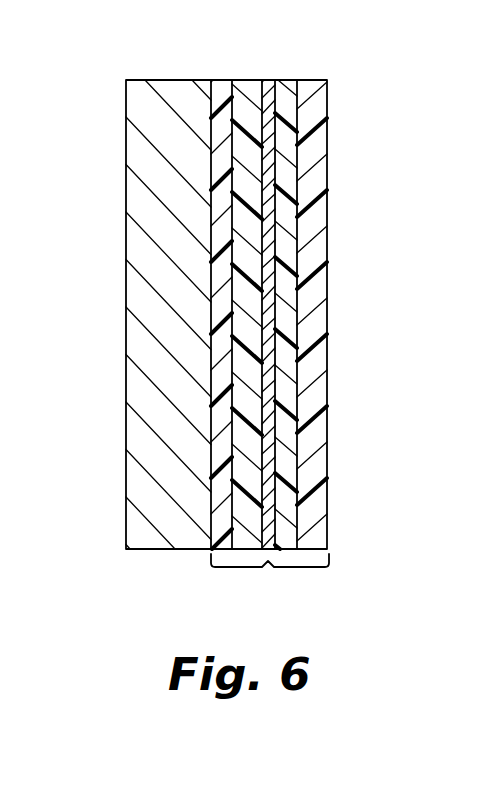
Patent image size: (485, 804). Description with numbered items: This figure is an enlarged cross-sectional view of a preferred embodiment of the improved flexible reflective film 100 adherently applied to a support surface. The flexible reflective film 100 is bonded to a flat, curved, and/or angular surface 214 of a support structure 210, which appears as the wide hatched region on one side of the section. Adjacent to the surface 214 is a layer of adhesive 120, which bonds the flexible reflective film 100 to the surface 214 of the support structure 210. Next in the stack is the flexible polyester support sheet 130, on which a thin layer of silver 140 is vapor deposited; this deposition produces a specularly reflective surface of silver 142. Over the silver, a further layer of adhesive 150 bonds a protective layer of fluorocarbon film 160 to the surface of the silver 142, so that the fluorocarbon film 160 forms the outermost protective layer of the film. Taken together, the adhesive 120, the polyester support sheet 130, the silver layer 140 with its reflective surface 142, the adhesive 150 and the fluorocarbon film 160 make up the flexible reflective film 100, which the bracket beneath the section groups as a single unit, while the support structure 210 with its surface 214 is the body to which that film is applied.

The flexible reflective film 100 is at (270, 581).
The layer of adhesive 120 is at (217, 93).
The flexible polyester support sheet 130 is at (248, 97).
The thin layer of silver 140 is at (267, 97).
The specularly reflective surface of silver 142 is at (278, 97).
The layer of adhesive 150 is at (288, 105).
The protective layer of fluorocarbon film 160 is at (317, 175).
The support structure 210 is at (160, 282).
The surface 214 is at (211, 172).